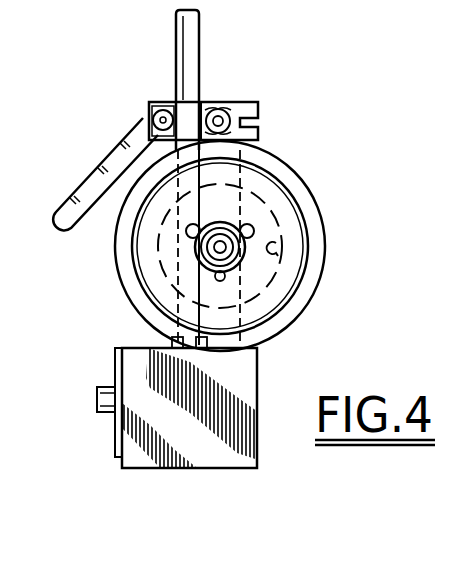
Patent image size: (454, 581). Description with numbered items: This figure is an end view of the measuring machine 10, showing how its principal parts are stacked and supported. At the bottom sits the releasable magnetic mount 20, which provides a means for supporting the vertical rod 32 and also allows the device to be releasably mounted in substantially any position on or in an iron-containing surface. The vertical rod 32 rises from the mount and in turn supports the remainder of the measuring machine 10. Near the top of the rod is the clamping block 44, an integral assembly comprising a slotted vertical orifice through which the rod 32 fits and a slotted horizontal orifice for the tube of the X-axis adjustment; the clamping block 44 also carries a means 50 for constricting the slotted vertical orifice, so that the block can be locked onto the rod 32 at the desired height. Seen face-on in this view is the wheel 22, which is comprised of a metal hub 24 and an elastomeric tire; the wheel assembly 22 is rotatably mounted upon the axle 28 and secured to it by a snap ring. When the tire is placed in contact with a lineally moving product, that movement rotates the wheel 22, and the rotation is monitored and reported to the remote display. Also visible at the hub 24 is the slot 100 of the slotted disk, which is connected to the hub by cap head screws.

The measuring machine 10 is at (90, 288).
The releasable magnetic mount 20 is at (221, 455).
The wheel 22 is at (295, 175).
The hub 24 is at (282, 208).
The axle 28 is at (241, 255).
The vertical rod 32 is at (199, 42).
The clamping block 44 is at (258, 105).
The means for constricting slotted vertical orifice 50 is at (96, 172).
The slot 100 is at (277, 247).